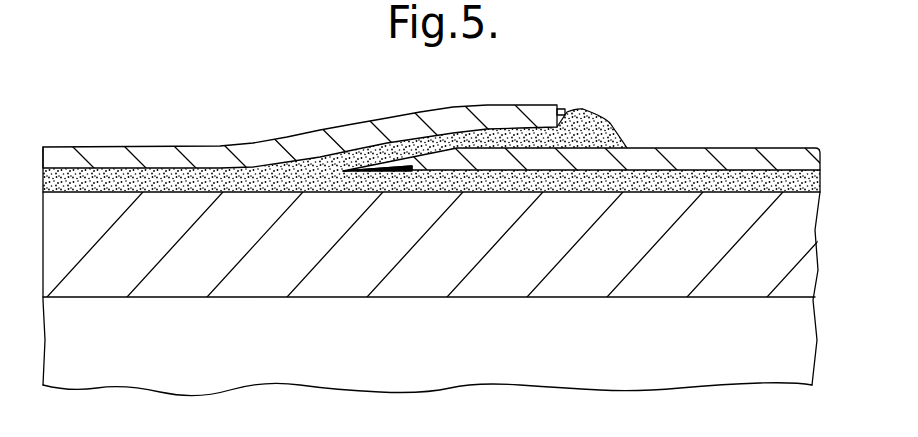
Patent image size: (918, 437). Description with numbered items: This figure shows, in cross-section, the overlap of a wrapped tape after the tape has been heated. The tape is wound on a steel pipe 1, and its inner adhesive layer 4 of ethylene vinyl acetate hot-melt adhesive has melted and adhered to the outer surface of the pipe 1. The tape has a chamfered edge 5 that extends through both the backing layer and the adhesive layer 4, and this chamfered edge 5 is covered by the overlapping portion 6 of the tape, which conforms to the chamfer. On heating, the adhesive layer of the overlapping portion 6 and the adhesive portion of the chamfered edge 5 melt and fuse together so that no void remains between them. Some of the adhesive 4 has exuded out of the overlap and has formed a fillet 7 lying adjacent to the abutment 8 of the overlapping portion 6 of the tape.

The steel pipe 1 is at (653, 279).
The adhesive layer 4 is at (728, 176).
The chamfered edge 5 is at (413, 172).
The overlapping portion 6 is at (367, 123).
The fillet 7 is at (601, 127).
The abutment 8 is at (565, 110).